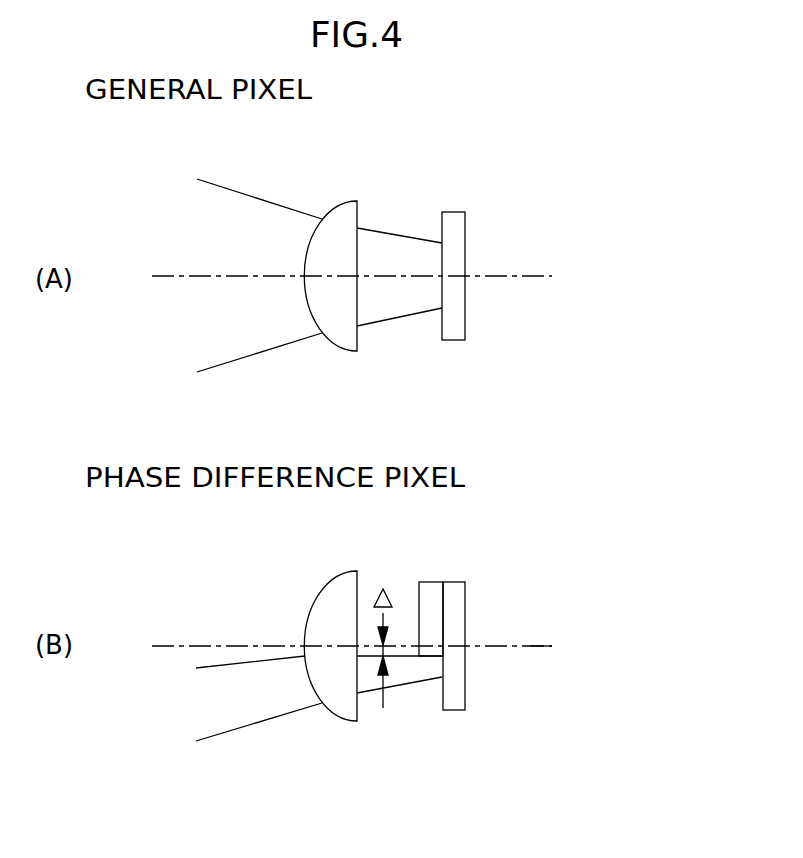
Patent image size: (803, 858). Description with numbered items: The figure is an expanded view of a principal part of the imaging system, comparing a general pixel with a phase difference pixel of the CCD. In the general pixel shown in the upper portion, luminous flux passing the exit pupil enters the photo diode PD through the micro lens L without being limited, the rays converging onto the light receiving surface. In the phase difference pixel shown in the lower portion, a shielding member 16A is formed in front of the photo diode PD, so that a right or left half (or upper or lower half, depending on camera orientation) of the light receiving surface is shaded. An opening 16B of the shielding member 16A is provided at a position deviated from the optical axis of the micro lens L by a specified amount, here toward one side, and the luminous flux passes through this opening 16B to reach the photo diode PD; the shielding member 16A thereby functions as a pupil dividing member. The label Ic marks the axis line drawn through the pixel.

The micro lens L is at (338, 194).
The photo diode PD is at (483, 155).
The shielding member 16A is at (433, 582).
The opening 16B is at (428, 706).
The optical axis / center of image sensor Ic is at (538, 647).